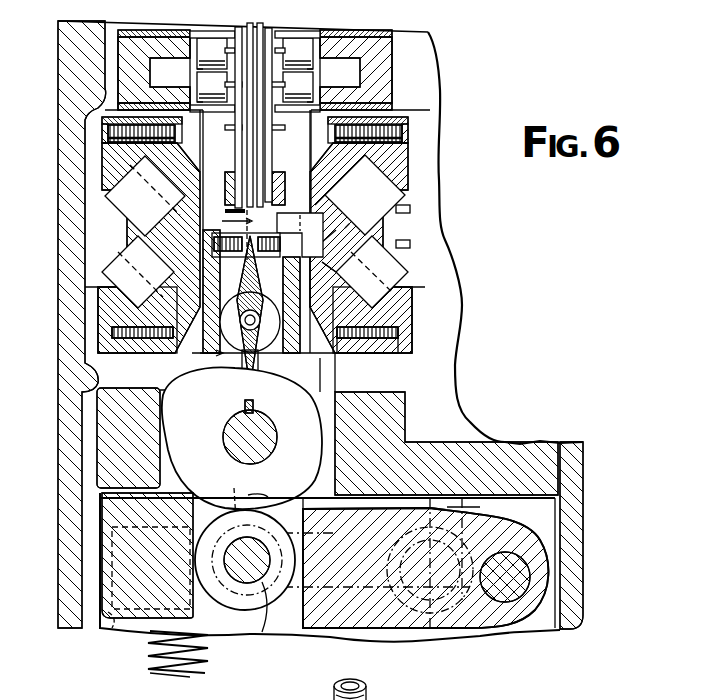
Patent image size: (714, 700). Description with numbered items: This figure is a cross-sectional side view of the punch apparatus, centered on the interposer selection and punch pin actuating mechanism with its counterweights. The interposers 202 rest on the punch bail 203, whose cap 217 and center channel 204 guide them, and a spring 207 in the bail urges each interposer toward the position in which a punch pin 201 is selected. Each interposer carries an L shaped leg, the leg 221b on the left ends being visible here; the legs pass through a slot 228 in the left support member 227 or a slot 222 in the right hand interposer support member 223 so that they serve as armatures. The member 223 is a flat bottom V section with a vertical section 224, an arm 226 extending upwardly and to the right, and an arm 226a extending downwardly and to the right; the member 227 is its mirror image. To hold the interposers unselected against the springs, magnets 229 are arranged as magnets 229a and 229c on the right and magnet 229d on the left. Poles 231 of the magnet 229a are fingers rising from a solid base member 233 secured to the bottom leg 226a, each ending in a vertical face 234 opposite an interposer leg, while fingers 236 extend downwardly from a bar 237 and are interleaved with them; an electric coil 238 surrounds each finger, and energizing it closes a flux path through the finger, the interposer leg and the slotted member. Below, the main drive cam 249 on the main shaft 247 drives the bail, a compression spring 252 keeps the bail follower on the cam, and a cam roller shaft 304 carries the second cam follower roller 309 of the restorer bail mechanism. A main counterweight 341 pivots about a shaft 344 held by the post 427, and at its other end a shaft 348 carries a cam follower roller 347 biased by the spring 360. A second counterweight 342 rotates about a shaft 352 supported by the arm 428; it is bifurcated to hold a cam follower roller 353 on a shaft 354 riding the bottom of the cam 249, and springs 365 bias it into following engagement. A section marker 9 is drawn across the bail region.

The punch pin 201 is at (232, 124).
The left support member 227 is at (182, 168).
The right hand interposer support member 223 is at (328, 158).
The arm 226 is at (330, 175).
The cap 217 is at (275, 178).
The vertical section 224 is at (355, 200).
The fingers 236 is at (348, 203).
The interposers 202 is at (353, 213).
The bar 237 is at (420, 152).
The magnet 229c is at (405, 195).
The electric coil 238 is at (418, 213).
The vertical face 234 is at (338, 243).
The poles 231 is at (385, 262).
The magnet 229a is at (400, 313).
The base member 233 is at (400, 345).
The slot 228 is at (412, 292).
The center channel 204 is at (322, 226).
The spring 207 is at (267, 281).
The slot 222 is at (250, 311).
The legs 221b is at (145, 196).
The magnet 229d is at (115, 213).
The magnets 229 is at (107, 278).
The cam roller shaft 304 is at (238, 362).
The second cam follower roller 309 is at (158, 438).
The punch bail 203 is at (242, 438).
The main shaft 247 is at (270, 437).
The arm 226a is at (280, 362).
The cam follower roller 353 is at (219, 498).
The main drive cam 249 is at (255, 486).
The shaft 354 is at (290, 510).
The arm 428 is at (481, 508).
The shaft 352 is at (495, 528).
The post 427 is at (562, 540).
The shaft 344 is at (533, 580).
The counterweight 341 is at (100, 498).
The counterweight 342 is at (100, 548).
The springs 365 is at (108, 630).
The spring 360 is at (140, 668).
The cam follower roller 347 is at (245, 636).
The shaft 348 is at (275, 636).
The compression spring 252 is at (380, 699).
The section line 9- 9 is at (219, 297).